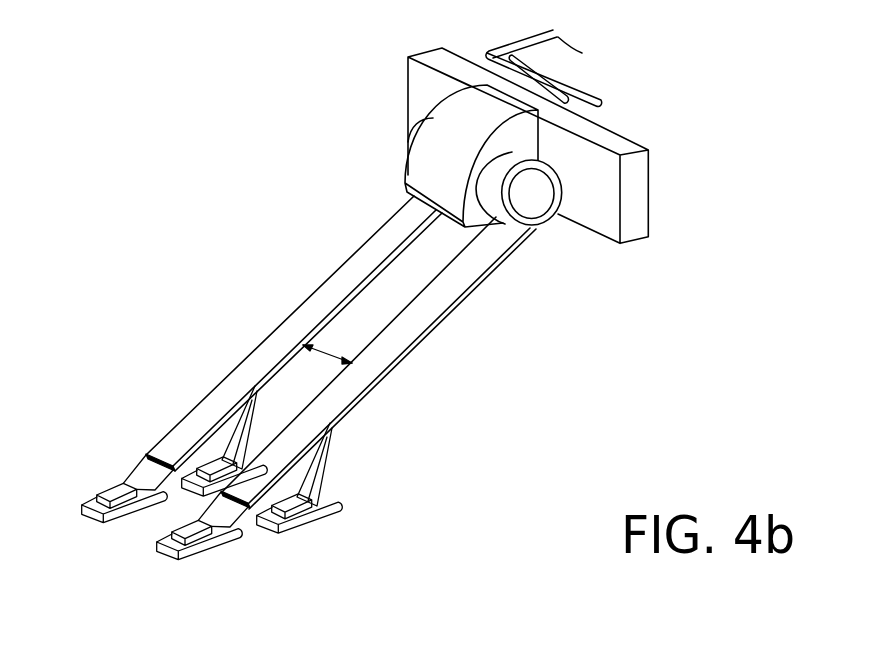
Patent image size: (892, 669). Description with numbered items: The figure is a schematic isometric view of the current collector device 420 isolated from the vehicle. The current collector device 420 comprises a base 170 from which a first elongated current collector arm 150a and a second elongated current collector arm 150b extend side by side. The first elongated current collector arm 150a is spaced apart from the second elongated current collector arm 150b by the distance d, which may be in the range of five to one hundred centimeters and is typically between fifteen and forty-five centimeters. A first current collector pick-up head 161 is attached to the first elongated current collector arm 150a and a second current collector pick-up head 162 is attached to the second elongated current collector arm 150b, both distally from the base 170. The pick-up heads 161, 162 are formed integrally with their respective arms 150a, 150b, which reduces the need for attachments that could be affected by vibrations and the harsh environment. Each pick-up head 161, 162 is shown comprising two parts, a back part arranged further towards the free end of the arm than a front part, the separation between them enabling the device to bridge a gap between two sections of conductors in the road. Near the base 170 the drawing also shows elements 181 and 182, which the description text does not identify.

The current collector device 420 is at (498, 286).
The base 170 is at (393, 167).
The flexible connector clip 181 is at (582, 53).
The inner connector strip 182 is at (602, 100).
The first elongated current collector arm 150a is at (334, 300).
The second elongated current collector arm 150b is at (392, 349).
The distance d is at (325, 358).
The first current collector pick-up head 161 is at (182, 468).
The second current collector pick-up head 162 is at (207, 545).